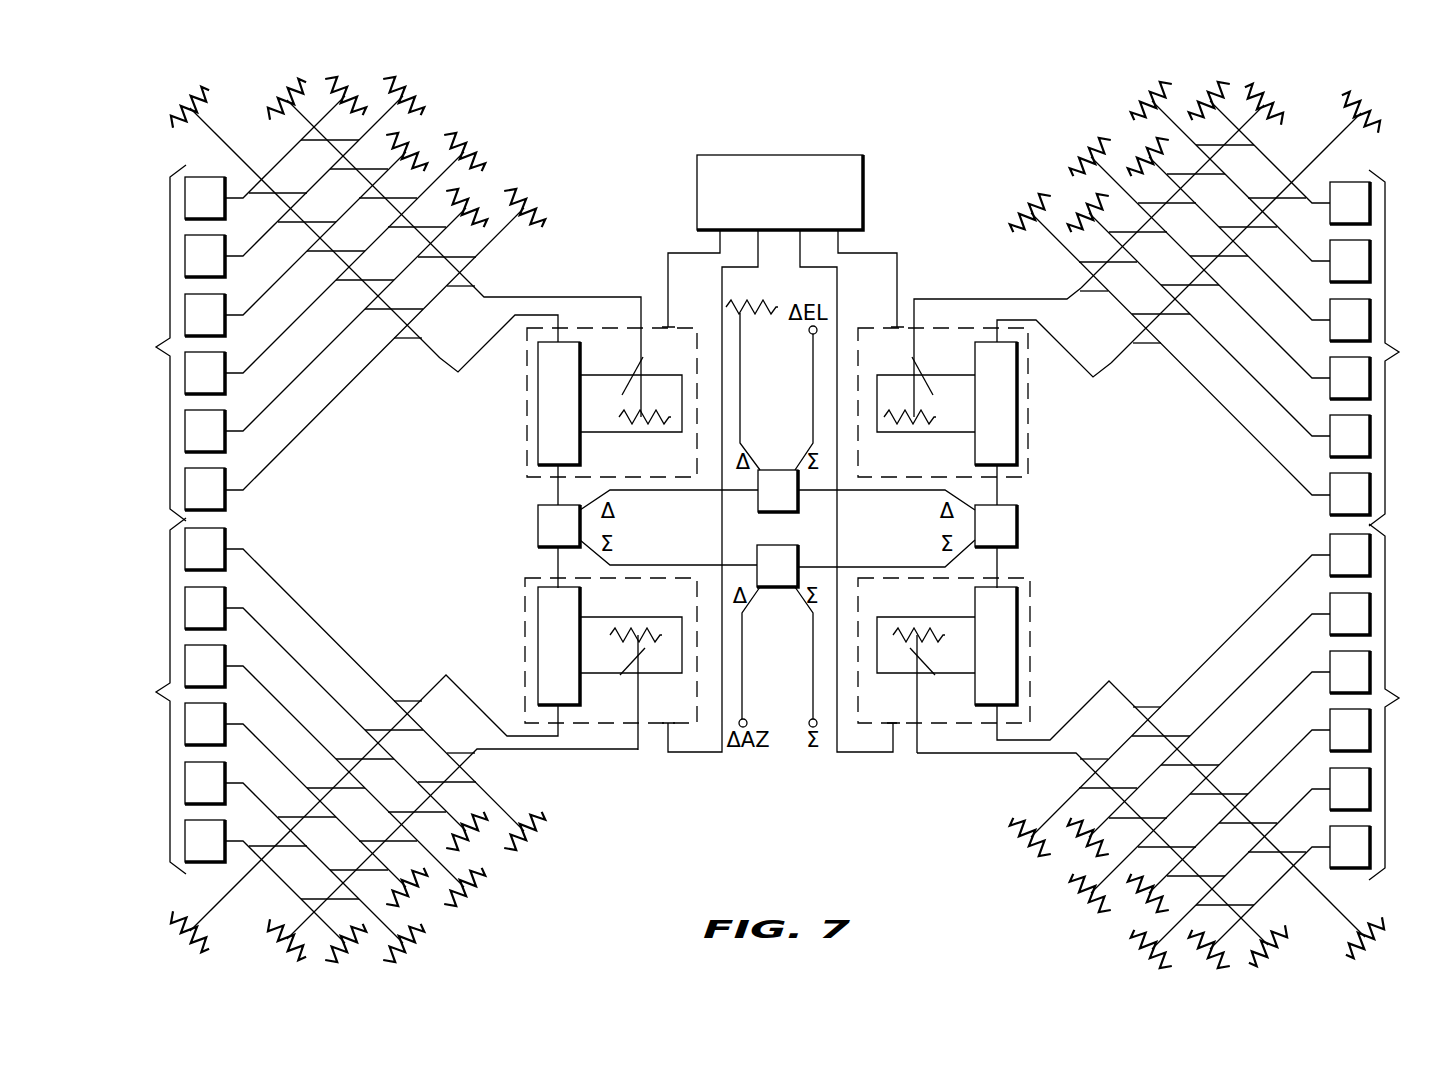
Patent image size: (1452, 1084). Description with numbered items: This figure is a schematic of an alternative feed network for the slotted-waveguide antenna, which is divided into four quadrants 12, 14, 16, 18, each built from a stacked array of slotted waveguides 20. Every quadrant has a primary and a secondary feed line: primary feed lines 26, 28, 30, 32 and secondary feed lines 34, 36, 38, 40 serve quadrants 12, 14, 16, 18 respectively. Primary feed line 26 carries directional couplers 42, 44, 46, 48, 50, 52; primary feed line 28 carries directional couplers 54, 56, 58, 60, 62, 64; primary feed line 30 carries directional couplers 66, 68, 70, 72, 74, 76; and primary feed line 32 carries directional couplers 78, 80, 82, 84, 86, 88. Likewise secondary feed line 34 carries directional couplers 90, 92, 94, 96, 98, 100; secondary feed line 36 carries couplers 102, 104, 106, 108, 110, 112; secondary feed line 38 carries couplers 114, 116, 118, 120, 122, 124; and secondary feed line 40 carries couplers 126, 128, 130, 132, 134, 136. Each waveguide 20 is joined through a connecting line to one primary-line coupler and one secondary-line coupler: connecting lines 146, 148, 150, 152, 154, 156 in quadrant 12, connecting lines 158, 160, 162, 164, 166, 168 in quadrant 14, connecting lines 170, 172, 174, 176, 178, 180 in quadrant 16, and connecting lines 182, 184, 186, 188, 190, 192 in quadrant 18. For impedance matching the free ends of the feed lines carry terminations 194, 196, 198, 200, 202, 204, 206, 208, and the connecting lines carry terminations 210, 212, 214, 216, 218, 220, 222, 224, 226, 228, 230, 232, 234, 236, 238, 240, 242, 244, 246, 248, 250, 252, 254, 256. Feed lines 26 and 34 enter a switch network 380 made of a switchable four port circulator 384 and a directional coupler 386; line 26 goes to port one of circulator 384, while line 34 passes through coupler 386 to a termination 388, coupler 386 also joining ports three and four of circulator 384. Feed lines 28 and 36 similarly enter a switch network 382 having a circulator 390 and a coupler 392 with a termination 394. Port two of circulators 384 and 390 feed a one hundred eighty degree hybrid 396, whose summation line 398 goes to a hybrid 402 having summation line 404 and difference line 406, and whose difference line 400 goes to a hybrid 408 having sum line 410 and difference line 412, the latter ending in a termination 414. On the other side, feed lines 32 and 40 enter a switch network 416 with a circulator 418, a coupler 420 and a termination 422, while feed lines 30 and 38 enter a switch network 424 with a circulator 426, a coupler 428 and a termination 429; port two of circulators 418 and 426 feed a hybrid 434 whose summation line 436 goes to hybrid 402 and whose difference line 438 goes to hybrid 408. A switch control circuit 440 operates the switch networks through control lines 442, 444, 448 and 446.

The quadrant 12 is at (1402, 348).
The quadrant 14 is at (1402, 702).
The quadrant 16 is at (152, 696).
The quadrant 18 is at (152, 343).
The slotted waveguide 20 is at (198, 207).
The primary feed line 26 is at (1077, 354).
The primary feed line 28 is at (1088, 699).
The primary feed line 30 is at (463, 675).
The primary feed line 32 is at (443, 364).
The secondary feed line 34 is at (1039, 298).
The secondary feed line 36 is at (1046, 755).
The secondary feed line 38 is at (503, 752).
The secondary feed line 40 is at (499, 295).
The directional coupler 42 is at (1143, 345).
The directional coupler 44 is at (1175, 316).
The directional coupler 46 is at (1204, 287).
The directional coupler 48 is at (1233, 258).
The directional coupler 50 is at (1262, 229).
The directional coupler 52 is at (1290, 199).
The directional coupler 54 is at (1144, 705).
The directional coupler 56 is at (1174, 734).
The directional coupler 58 is at (1203, 763).
The directional coupler 60 is at (1232, 792).
The directional coupler 62 is at (1261, 821).
The directional coupler 64 is at (1290, 850).
The directional coupler 66 is at (411, 699).
The directional coupler 68 is at (381, 728).
The directional coupler 70 is at (352, 757).
The directional coupler 72 is at (323, 786).
The directional coupler 74 is at (294, 815).
The directional coupler 76 is at (265, 844).
The directional coupler 78 is at (410, 340).
The directional coupler 80 is at (381, 311).
The directional coupler 82 is at (352, 282).
The directional coupler 84 is at (323, 253).
The directional coupler 86 is at (294, 224).
The directional coupler 88 is at (264, 194).
The directional coupler 90 is at (1090, 293).
The directional coupler 92 is at (1121, 264).
The directional coupler 94 is at (1151, 234).
The directional coupler 96 is at (1180, 205).
The directional coupler 98 is at (1209, 176).
The directional coupler 100 is at (1238, 147).
The directional coupler 102 is at (1092, 757).
The directional coupler 104 is at (1121, 786).
The directional coupler 106 is at (1151, 816).
The directional coupler 108 is at (1180, 845).
The directional coupler 110 is at (1209, 874).
The directional coupler 112 is at (1238, 903).
The directional coupler 114 is at (462, 751).
The directional coupler 116 is at (433, 780).
The directional coupler 118 is at (404, 810).
The directional coupler 120 is at (375, 839).
The directional coupler 122 is at (346, 868).
The directional coupler 124 is at (317, 897).
The directional coupler 126 is at (464, 288).
The directional coupler 128 is at (435, 259).
The directional coupler 130 is at (405, 229).
The directional coupler 132 is at (376, 200).
The directional coupler 134 is at (347, 171).
The directional coupler 136 is at (318, 142).
The connecting line 146 is at (1259, 441).
The connecting line 148 is at (1302, 434).
The connecting line 150 is at (1302, 376).
The connecting line 152 is at (1303, 318).
The connecting line 154 is at (1304, 260).
The connecting line 156 is at (1318, 193).
The connecting line 158 is at (1273, 594).
The connecting line 160 is at (1293, 633).
The connecting line 162 is at (1293, 691).
The connecting line 164 is at (1295, 748).
The connecting line 166 is at (1300, 800).
The connecting line 168 is at (1308, 851).
The connecting line 170 is at (252, 563).
The connecting line 172 is at (252, 614).
The connecting line 174 is at (252, 672).
The connecting line 176 is at (252, 731).
The connecting line 178 is at (252, 789).
The connecting line 180 is at (241, 845).
The connecting line 182 is at (296, 437).
The connecting line 184 is at (248, 430).
The connecting line 186 is at (248, 372).
The connecting line 188 is at (248, 314).
The connecting line 190 is at (247, 256).
The connecting line 192 is at (237, 192).
The termination 194 is at (1376, 106).
The termination 196 is at (1370, 927).
The termination 198 is at (184, 926).
The termination 200 is at (180, 106).
The termination 202 is at (1283, 102).
The termination 204 is at (1283, 953).
The termination 206 is at (273, 946).
The termination 208 is at (273, 97).
The termination 210 is at (1030, 206).
The termination 212 is at (1078, 185).
The termination 214 is at (1086, 144).
The termination 216 is at (1134, 143).
The termination 218 is at (1138, 94).
The termination 220 is at (1212, 93).
The termination 222 is at (1025, 833).
The termination 224 is at (1088, 856).
The termination 226 is at (1090, 898).
The termination 228 is at (1135, 918).
The termination 230 is at (1150, 955).
The termination 232 is at (1228, 958).
The termination 234 is at (545, 828).
The termination 236 is at (470, 847).
The termination 238 is at (474, 893).
The termination 240 is at (433, 907).
The termination 242 is at (422, 948).
The termination 244 is at (326, 953).
The termination 246 is at (525, 203).
The termination 248 is at (478, 182).
The termination 250 is at (470, 138).
The termination 252 is at (420, 143).
The termination 254 is at (415, 88).
The termination 256 is at (340, 88).
The switch network 380 is at (935, 327).
The switch network 382 is at (957, 726).
The switchable four port circulator 384 is at (1006, 420).
The directional coupler 386 is at (902, 366).
The termination 388 is at (905, 426).
The circulator 390 is at (1008, 646).
The coupler 392 is at (897, 690).
The termination 394 is at (916, 627).
The 180° hybrid 396 is at (1002, 530).
The summation line 398 is at (848, 565).
The difference line 400 is at (850, 492).
The 180° hybrid 402 is at (773, 562).
The summation line 404 is at (812, 658).
The difference line 406 is at (745, 622).
The 180° hybrid 408 is at (777, 499).
The sum line 410 is at (811, 381).
The difference line 412 is at (748, 388).
The termination 414 is at (750, 306).
The switch network 416 is at (588, 327).
The switchable four port circulator 418 is at (550, 411).
The directional coupler 420 is at (655, 366).
The termination 422 is at (650, 426).
The switch network 424 is at (617, 724).
The circulator 426 is at (522, 630).
The coupler 428 is at (626, 684).
The termination 429 is at (632, 627).
The 180° hybrid 434 is at (553, 530).
The summation line 436 is at (707, 565).
The difference line 438 is at (705, 492).
The switch control circuit 440 is at (849, 175).
The control line 442 is at (867, 252).
The control line 444 is at (837, 284).
The control line 446 is at (722, 284).
The control line 448 is at (690, 252).